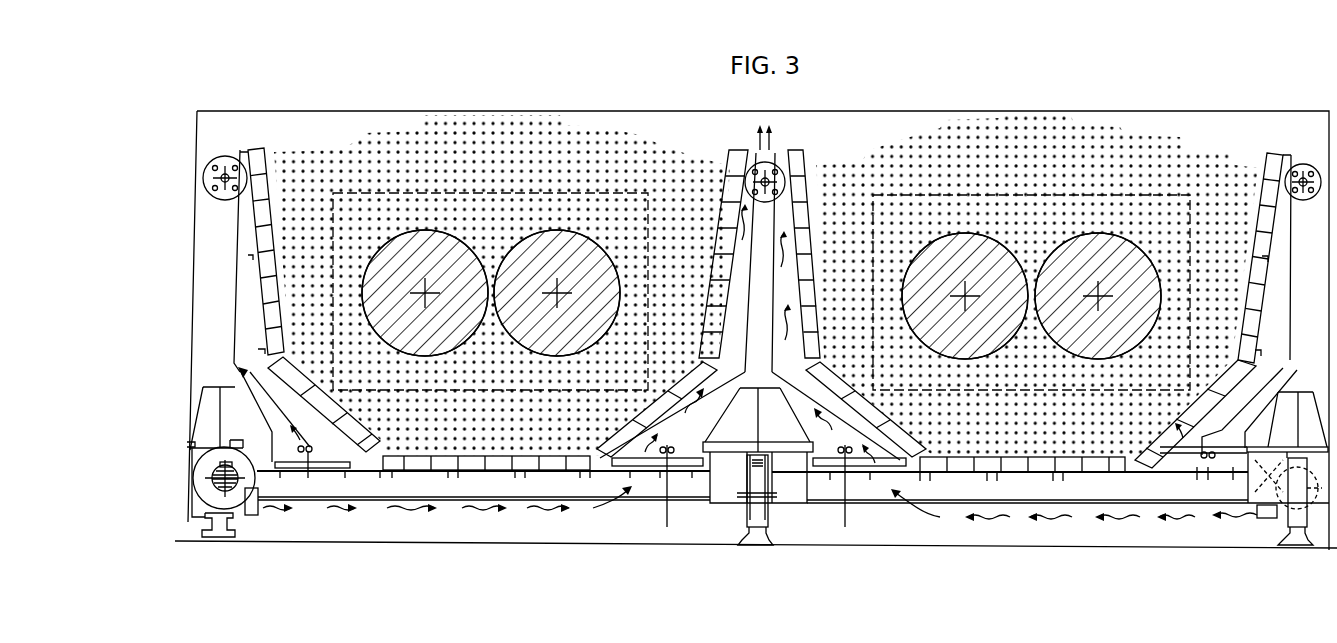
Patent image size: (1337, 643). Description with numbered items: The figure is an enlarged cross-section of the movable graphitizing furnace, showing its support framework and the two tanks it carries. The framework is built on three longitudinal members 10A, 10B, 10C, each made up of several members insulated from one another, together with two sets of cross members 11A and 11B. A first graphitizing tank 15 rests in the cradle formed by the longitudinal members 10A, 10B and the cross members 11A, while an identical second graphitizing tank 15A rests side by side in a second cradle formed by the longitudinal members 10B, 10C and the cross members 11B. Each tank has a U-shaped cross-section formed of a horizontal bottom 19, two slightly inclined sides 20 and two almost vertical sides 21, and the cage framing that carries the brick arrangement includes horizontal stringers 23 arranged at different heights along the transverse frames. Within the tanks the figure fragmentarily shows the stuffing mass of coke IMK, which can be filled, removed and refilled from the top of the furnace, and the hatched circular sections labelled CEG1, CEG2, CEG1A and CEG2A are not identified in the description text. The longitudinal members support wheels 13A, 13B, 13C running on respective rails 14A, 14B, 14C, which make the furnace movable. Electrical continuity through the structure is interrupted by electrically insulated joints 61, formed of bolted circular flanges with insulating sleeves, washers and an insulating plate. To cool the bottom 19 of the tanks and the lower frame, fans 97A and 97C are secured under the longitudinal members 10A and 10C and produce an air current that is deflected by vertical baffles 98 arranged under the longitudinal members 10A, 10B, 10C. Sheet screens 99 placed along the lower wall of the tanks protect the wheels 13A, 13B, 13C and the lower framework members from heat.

The electrically insulated joint 61 is at (222, 146).
The horizontal stringer 23 is at (250, 153).
The stuffing mass of coke IMK is at (337, 167).
The first cylinder CEG1 is at (425, 253).
The first graphitizing tank 15 is at (492, 138).
The second cylinder CEG2 is at (562, 255).
The almost vertical side 21 is at (797, 168).
The first cylinder of second chamber CEG1A is at (970, 253).
The second graphitizing tank 15A is at (1053, 144).
The second cylinder of second chamber CEG2A is at (1117, 253).
The longitudinal member 10A is at (208, 403).
The longitudinal member 10B is at (752, 440).
The longitudinal member 10C is at (1288, 402).
The vertical baffle 98 is at (190, 530).
The rail 14A is at (217, 537).
The wheel 13A is at (233, 503).
The fan 97A is at (252, 516).
The horizontal bottom 19 is at (422, 462).
The cross member 11A is at (482, 487).
The sheet screen 99 is at (663, 455).
The rail 14B is at (755, 545).
The wheel 13B is at (768, 517).
The slightly inclined side 20 is at (880, 427).
The cross member 11B is at (1060, 493).
The fan 97C is at (1277, 513).
The wheel 13C is at (1293, 523).
The rail 14C is at (1296, 546).